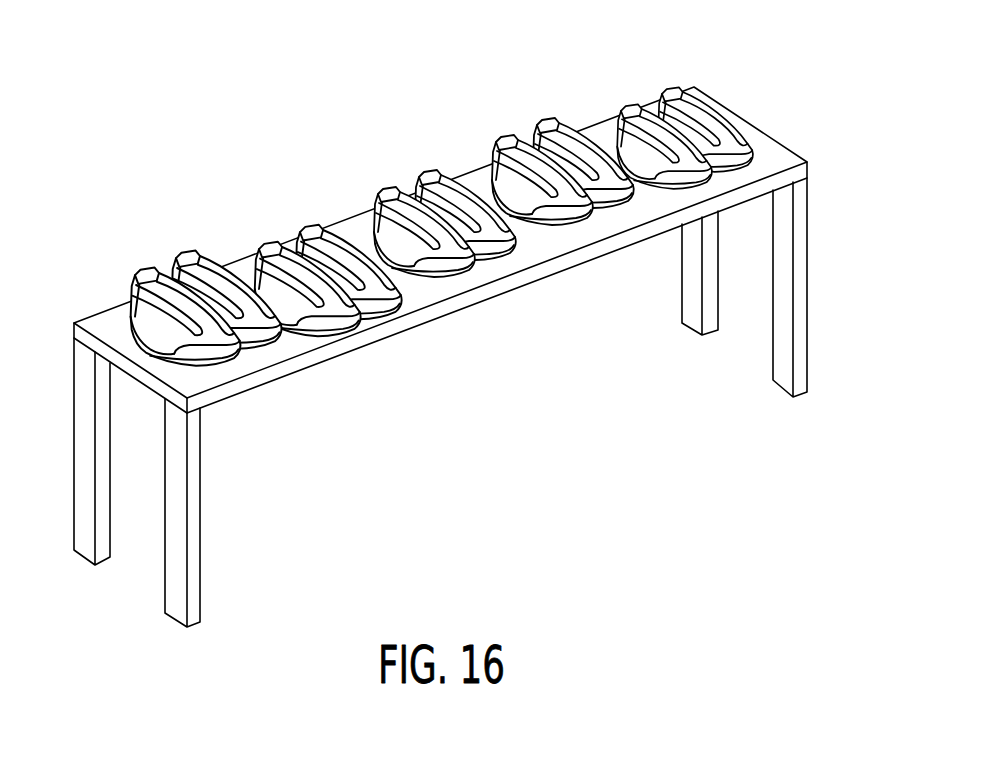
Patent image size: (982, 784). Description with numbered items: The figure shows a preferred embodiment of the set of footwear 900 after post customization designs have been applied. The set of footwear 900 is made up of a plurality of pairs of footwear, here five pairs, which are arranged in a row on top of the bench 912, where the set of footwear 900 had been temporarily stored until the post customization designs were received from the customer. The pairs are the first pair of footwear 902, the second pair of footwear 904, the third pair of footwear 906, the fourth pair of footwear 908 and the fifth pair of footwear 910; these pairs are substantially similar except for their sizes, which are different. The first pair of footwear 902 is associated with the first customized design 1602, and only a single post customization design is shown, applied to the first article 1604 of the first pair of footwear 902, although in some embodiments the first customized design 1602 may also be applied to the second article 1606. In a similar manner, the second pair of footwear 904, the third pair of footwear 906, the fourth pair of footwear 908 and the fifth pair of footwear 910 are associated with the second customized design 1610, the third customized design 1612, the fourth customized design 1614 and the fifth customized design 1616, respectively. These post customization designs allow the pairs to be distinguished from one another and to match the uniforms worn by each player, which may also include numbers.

The set of footwear 900 is at (687, 13).
The first pair of footwear 902 is at (704, 105).
The second pair of footwear 904 is at (577, 240).
The third pair of footwear 906 is at (450, 290).
The fourth pair of footwear 908 is at (343, 329).
The fifth pair of footwear 910 is at (214, 378).
The bench 912 is at (781, 357).
The first customized design 1602 is at (638, 177).
The first article 1604 is at (669, 172).
The second article 1606 is at (740, 98).
The second customized design 1610 is at (538, 228).
The third customized design 1612 is at (424, 273).
The fourth customized design 1614 is at (304, 308).
The fifth customized design 1616 is at (174, 364).